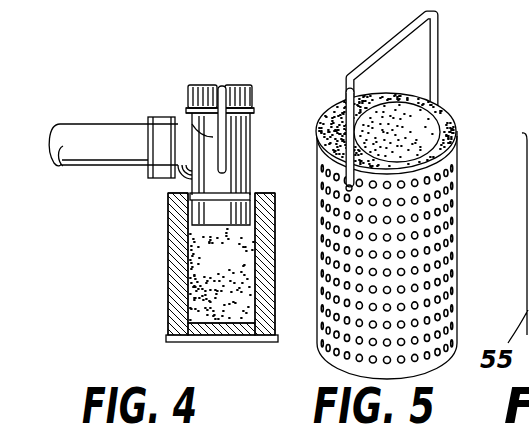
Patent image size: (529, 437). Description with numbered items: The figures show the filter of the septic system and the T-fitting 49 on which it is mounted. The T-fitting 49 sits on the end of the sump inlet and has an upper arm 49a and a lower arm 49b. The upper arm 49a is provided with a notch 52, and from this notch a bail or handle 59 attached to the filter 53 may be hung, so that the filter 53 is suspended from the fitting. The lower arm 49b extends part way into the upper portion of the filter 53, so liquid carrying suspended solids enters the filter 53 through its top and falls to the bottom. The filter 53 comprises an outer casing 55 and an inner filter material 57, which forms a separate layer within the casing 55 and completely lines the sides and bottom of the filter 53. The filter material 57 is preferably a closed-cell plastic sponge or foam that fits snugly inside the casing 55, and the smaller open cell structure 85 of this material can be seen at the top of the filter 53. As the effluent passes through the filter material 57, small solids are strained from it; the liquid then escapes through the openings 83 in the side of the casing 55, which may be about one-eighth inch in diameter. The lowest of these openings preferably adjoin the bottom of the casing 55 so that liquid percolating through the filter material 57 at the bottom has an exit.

In FIG. 4, the T-fitting 49 is at (182, 113).
In FIG. 4, the upper arm of the T-fitting 49a is at (250, 100).
In FIG. 4, the lower arm of the T-fitting 49b is at (214, 232).
In FIG. 4, the notch 52 is at (232, 52).
In FIG. 4, the filter 53 is at (168, 228).
In FIG. 5, the filter 53 is at (457, 167).
In FIG. 4, the outer casing 55 is at (168, 264).
In FIG. 4, the filter material 57 is at (183, 302).
In FIG. 5, the filter material 57 is at (338, 112).
In FIG. 4, the bail or handle 59 is at (212, 97).
In FIG. 5, the bail or handle 59 is at (438, 55).
In FIG. 5, the openings in the casing 83 is at (455, 267).
In FIG. 5, the open cell structure of the filter material 85 is at (398, 93).